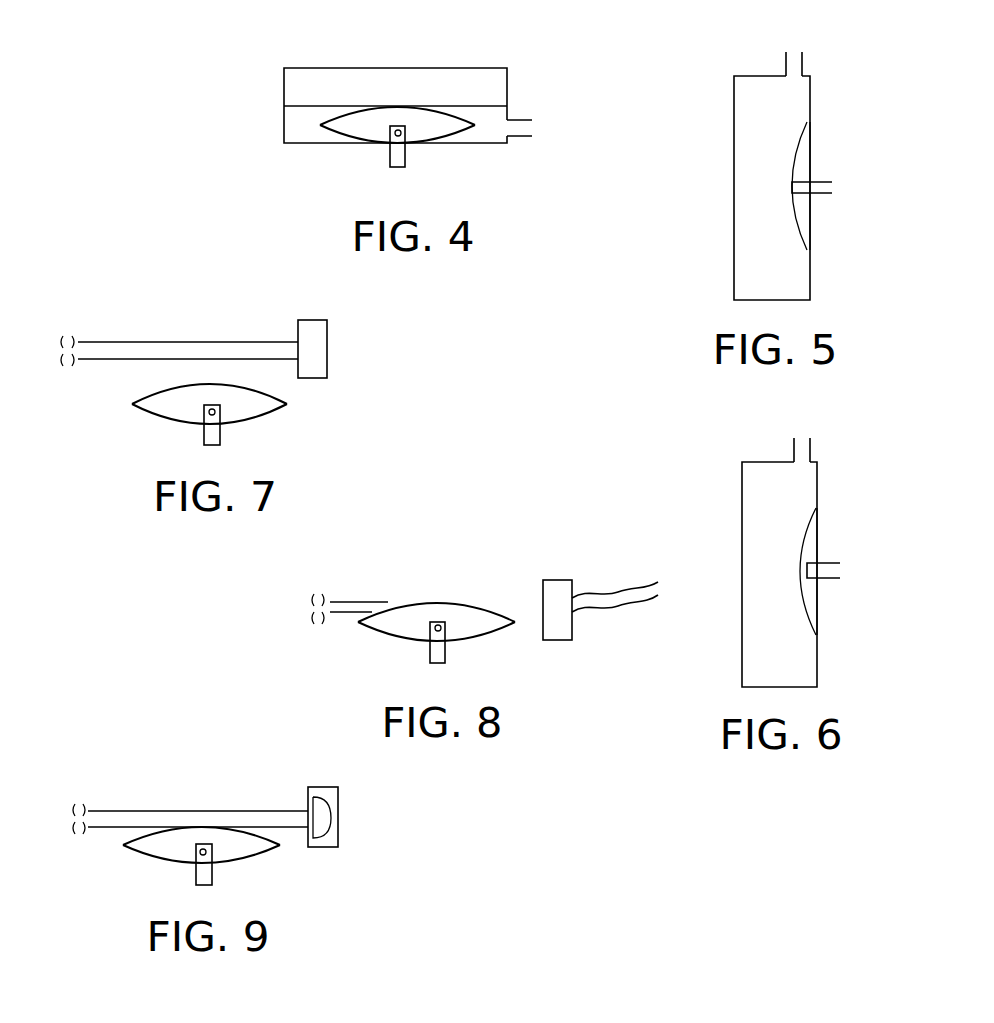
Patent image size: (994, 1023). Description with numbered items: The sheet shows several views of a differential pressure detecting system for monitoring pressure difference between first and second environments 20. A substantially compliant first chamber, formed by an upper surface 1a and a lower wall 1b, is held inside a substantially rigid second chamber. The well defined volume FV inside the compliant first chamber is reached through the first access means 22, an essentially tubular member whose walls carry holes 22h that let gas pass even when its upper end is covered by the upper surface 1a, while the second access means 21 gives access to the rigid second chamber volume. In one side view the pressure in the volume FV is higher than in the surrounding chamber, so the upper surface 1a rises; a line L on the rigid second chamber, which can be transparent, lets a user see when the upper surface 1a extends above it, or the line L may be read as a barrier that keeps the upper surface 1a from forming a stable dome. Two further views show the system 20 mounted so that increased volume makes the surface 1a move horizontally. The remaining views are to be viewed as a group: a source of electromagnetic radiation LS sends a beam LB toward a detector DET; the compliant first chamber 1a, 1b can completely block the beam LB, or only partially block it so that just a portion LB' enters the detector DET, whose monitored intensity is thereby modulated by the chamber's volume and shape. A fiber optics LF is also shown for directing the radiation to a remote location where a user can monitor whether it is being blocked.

In FIG. 4, the differential pressure detecting system 20 is at (463, 38).
In FIG. 5, the differential pressure detecting system 20 is at (750, 50).
In FIG. 6, the differential pressure detecting system 20 is at (740, 438).
In FIG. 4, the second access means 21 is at (522, 140).
In FIG. 5, the second access means 21 is at (808, 62).
In FIG. 6, the second access means 21 is at (817, 442).
In FIG. 4, the first access means 22 is at (387, 160).
In FIG. 5, the first access means 22 is at (820, 198).
In FIG. 6, the first access means 22 is at (828, 582).
In FIG. 7, the first access means 22 is at (200, 438).
In FIG. 8, the first access means 22 is at (423, 658).
In FIG. 9, the first access means 22 is at (192, 878).
In FIG. 4, the holes 22h is at (402, 125).
In FIG. 7, the holes 22h is at (205, 402).
In FIG. 8, the holes 22h is at (440, 618).
In FIG. 9, the holes 22h is at (203, 842).
In FIG. 4, the upper surface of substantially compliant first chamber 1a is at (338, 115).
In FIG. 5, the upper surface of substantially compliant first chamber 1a is at (798, 133).
In FIG. 6, the upper surface of substantially compliant first chamber 1a is at (807, 520).
In FIG. 7, the upper surface of substantially compliant first chamber 1a is at (287, 395).
In FIG. 8, the upper surface of substantially compliant first chamber 1a is at (478, 602).
In FIG. 9, the upper surface of substantially compliant first chamber 1a is at (253, 835).
In FIG. 4, the lower wall of substantially compliant first chamber 1b is at (335, 135).
In FIG. 7, the lower wall of substantially compliant first chamber 1b is at (255, 420).
In FIG. 8, the lower wall of substantially compliant first chamber 1b is at (483, 638).
In FIG. 9, the lower wall of substantially compliant first chamber 1b is at (223, 863).
In FIG. 4, the line L is at (487, 102).
In FIG. 5, the first chamber volume FV is at (803, 163).
In FIG. 6, the first chamber volume FV is at (813, 547).
In FIG. 7, the source of electromagnetic radiation LS is at (53, 351).
In FIG. 8, the source of electromagnetic radiation LS is at (302, 609).
In FIG. 9, the source of electromagnetic radiation LS is at (63, 819).
In FIG. 7, the beam of electromagnetic radiation LB is at (193, 315).
In FIG. 8, the beam of electromagnetic radiation LB is at (342, 577).
In FIG. 9, the beam of electromagnetic radiation LB is at (129, 793).
In FIG. 9, the portion of the beam of electromagnetic radiation LB' is at (255, 792).
In FIG. 7, the detector DET is at (312, 349).
In FIG. 8, the detector DET is at (557, 610).
In FIG. 9, the detector DET is at (323, 804).
In FIG. 8, the fiber optics LF is at (620, 588).